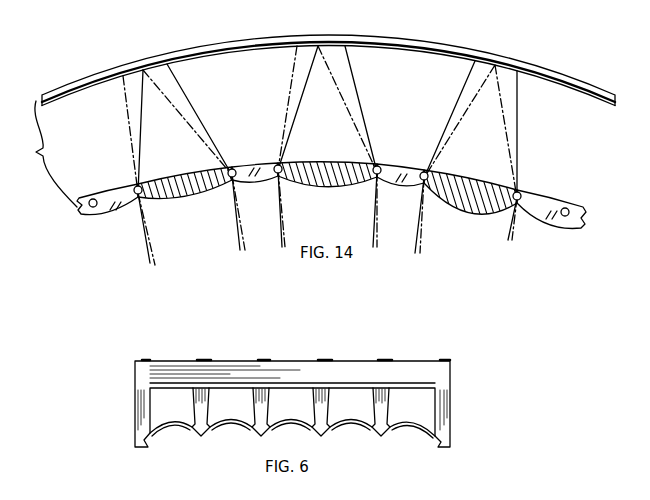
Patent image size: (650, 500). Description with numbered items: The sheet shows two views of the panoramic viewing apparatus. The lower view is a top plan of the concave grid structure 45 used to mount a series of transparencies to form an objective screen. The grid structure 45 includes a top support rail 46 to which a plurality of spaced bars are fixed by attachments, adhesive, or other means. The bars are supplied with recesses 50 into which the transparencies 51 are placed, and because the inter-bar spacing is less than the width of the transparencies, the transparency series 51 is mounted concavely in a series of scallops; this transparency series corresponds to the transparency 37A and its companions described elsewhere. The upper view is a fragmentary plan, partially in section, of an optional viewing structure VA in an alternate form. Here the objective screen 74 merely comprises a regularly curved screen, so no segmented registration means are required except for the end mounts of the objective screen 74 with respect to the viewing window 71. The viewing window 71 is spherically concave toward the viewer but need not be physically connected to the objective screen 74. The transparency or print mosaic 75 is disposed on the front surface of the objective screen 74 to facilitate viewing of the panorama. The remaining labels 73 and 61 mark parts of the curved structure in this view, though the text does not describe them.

In FIG. 14, the objective screen 74 is at (433, 47).
In FIG. 14, the transparency or print mosaic 75 is at (590, 96).
In FIG. 14, the viewing structure VA is at (47, 154).
In FIG. 14, the left end link 73 is at (126, 213).
In FIG. 14, the link 61 is at (337, 184).
In FIG. 14, the viewing window 71 is at (562, 205).
In FIG. 6, the top support rail 46 is at (173, 368).
In FIG. 6, the concave grid structure 45 is at (293, 368).
In FIG. 6, the transparency 37A is at (175, 430).
In FIG. 6, the recess 50 is at (149, 438).
In FIG. 6, the transparencies 51 is at (228, 424).